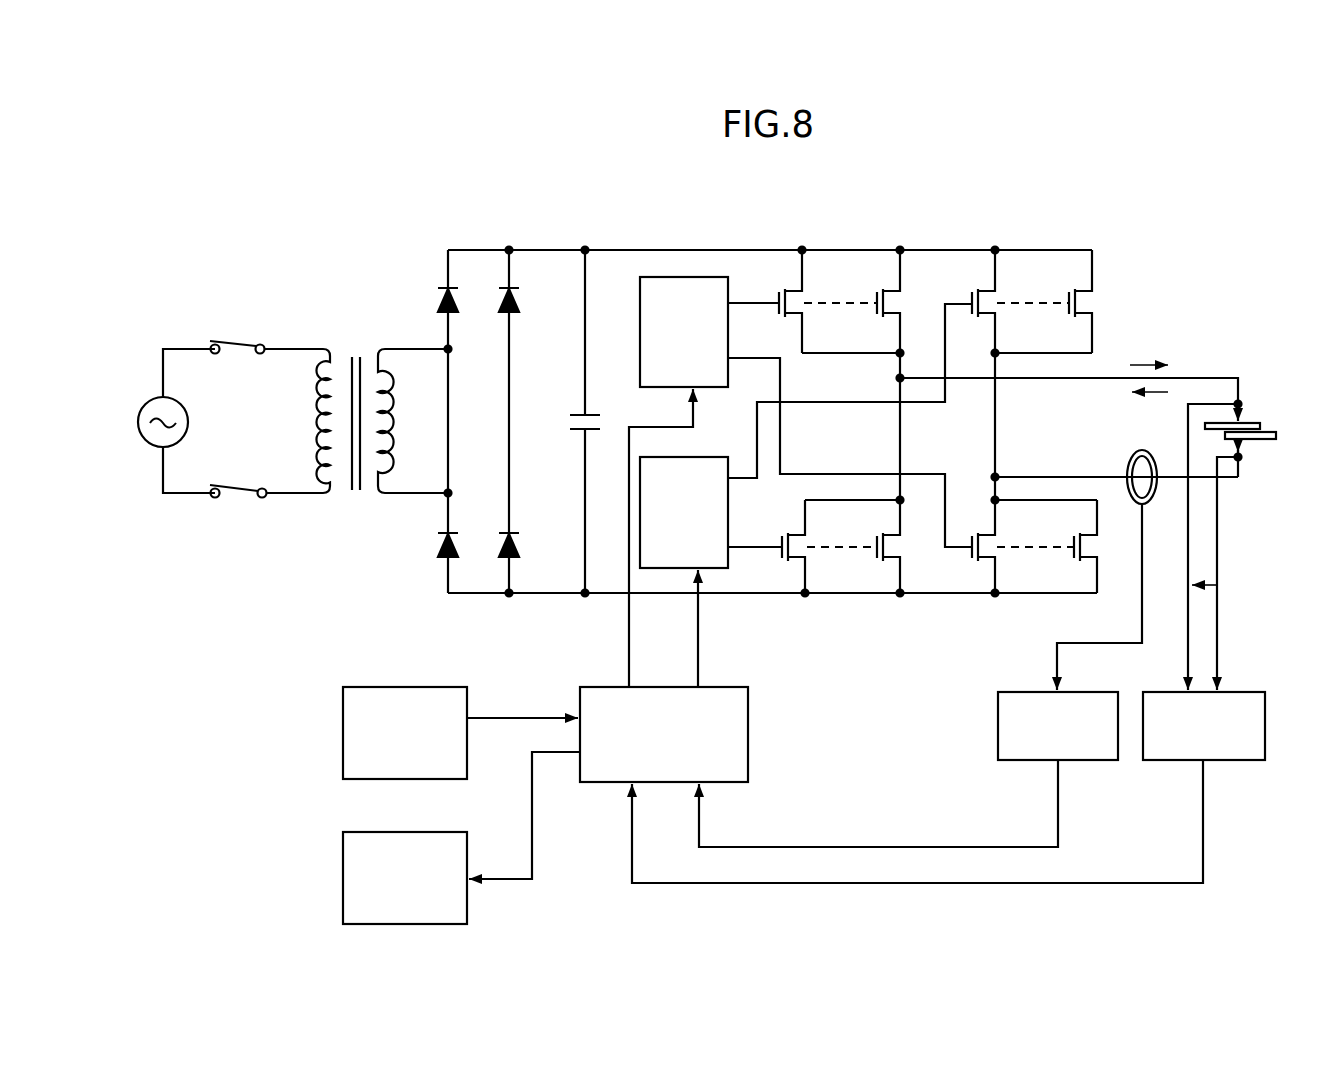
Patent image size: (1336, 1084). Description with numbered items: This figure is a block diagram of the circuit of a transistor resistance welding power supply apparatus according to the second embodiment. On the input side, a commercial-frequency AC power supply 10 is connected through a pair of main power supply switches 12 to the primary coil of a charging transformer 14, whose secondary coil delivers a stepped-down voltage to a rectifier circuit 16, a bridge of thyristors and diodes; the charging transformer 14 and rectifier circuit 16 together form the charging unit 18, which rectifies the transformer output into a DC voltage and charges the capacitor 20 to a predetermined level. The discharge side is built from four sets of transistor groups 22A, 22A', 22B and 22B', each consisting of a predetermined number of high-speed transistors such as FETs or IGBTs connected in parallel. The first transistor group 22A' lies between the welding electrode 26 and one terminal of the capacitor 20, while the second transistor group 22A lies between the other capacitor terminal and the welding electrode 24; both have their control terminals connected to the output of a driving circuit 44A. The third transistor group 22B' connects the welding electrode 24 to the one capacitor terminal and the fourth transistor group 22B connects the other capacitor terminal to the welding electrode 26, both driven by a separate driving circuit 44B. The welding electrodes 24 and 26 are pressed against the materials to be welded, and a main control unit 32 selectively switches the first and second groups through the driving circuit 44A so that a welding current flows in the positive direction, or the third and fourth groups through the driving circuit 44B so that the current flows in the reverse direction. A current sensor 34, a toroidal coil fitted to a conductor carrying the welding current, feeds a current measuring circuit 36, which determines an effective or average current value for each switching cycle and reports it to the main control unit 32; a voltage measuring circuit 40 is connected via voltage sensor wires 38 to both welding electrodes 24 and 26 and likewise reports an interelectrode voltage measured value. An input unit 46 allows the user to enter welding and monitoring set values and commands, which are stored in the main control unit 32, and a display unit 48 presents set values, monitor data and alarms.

The AC power supply 10 is at (190, 400).
The main power supply switches 12 is at (237, 338).
The charging transformer 14 is at (351, 344).
The rectifier circuit 16 is at (478, 275).
The charging unit 18 is at (366, 265).
The capacitor 20 is at (568, 420).
The second transistor group 22A is at (826, 257).
The fourth transistor group 22B is at (1065, 264).
The first transistor group 22A' is at (1037, 532).
The third transistor group 22B' is at (836, 537).
The welding electrode 24 is at (1248, 410).
The welding electrode 26 is at (1244, 455).
The main control unit 32 is at (578, 695).
The current sensor 34 is at (1128, 457).
The current measuring circuit 36 is at (1096, 690).
The voltage sensor wires 38 is at (1218, 551).
The voltage measuring circuit 40 is at (1242, 690).
The driving circuit 44A is at (680, 277).
The driving circuit 44B is at (706, 457).
The input unit 46 is at (343, 700).
The display unit 48 is at (343, 862).